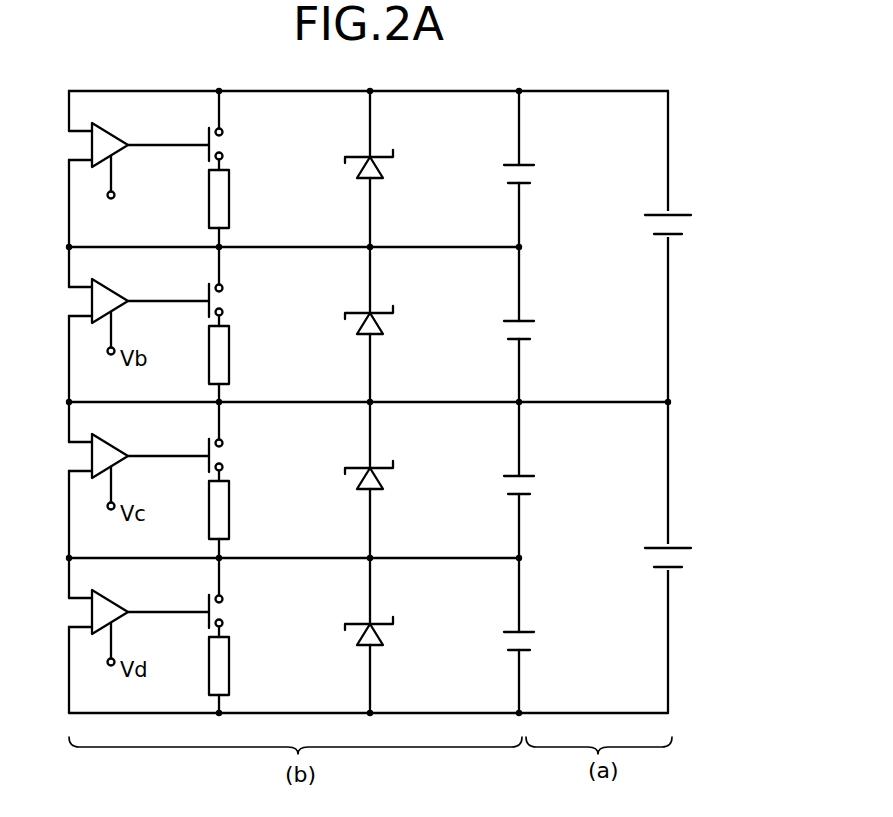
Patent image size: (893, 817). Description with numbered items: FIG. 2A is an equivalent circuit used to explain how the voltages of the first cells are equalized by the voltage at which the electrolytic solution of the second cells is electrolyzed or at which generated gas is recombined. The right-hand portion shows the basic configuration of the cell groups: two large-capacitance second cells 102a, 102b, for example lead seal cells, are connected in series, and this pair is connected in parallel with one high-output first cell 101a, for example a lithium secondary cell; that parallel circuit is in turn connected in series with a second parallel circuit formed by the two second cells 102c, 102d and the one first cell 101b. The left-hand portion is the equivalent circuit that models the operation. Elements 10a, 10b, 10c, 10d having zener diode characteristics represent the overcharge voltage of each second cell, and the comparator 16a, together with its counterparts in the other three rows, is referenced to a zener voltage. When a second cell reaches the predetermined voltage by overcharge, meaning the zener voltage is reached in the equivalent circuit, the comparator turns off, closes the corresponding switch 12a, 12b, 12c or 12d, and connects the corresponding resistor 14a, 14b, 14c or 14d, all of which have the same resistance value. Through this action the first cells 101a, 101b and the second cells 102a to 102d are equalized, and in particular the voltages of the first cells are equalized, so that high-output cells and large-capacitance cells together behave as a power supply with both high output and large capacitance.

The comparator 16a is at (139, 169).
The switch 12a is at (231, 146).
The switch 12b is at (231, 302).
The switch 12c is at (231, 457).
The switch 12d is at (231, 613).
The resistor 14a is at (230, 201).
The resistor 14b is at (230, 357).
The resistor 14c is at (230, 512).
The resistor 14d is at (230, 668).
The element having zener diode characteristics 10a is at (388, 167).
The element having zener diode characteristics 10b is at (388, 323).
The element having zener diode characteristics 10c is at (388, 478).
The element having zener diode characteristics 10d is at (388, 634).
The second cell 102a is at (535, 176).
The second cell 102b is at (535, 332).
The second cell 102c is at (535, 487).
The second cell 102d is at (535, 643).
The first cell 101a is at (693, 224).
The first cell 101b is at (693, 557).